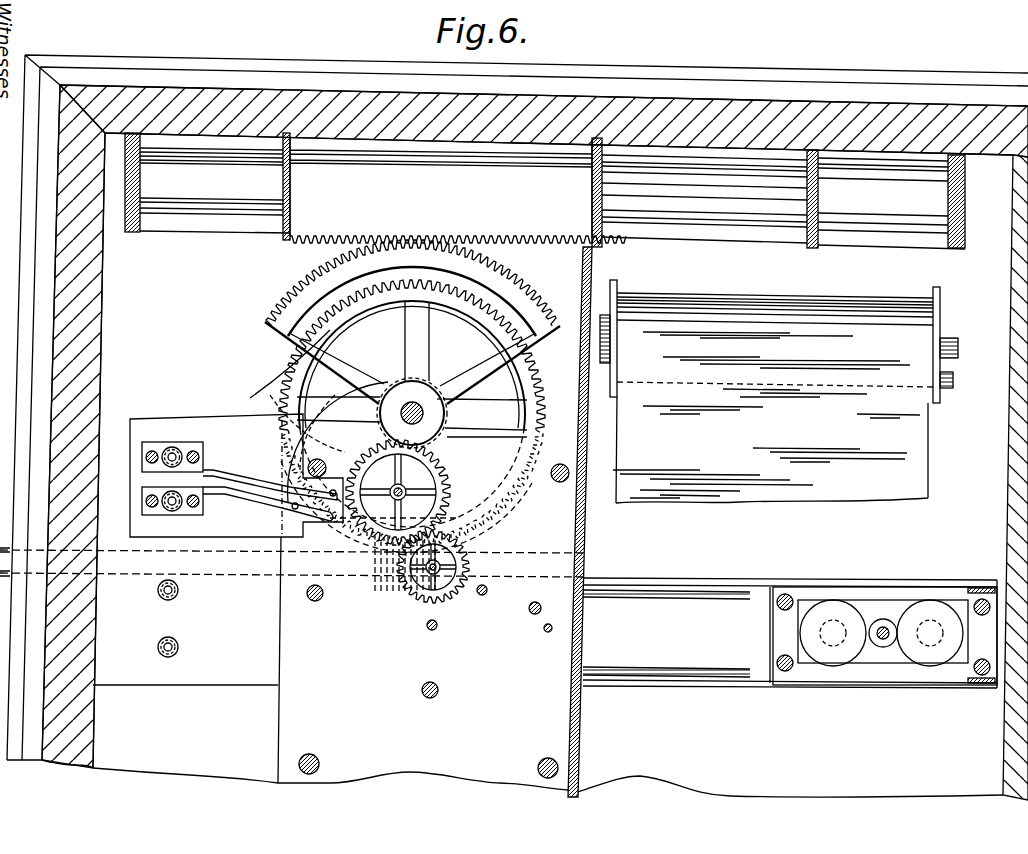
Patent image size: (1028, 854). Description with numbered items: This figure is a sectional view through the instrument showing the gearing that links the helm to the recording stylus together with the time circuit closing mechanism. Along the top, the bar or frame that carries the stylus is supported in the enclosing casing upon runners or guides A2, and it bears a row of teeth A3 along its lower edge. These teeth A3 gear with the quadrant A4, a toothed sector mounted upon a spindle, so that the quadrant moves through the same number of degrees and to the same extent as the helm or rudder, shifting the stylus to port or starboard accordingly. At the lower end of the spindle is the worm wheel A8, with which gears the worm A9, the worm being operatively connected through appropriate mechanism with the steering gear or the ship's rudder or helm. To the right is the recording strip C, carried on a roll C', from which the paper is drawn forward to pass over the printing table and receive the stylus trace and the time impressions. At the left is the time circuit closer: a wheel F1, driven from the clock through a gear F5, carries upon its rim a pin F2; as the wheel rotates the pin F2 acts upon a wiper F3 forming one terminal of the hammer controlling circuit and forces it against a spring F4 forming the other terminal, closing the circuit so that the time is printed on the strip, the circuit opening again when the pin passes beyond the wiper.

The runners or guides A2 is at (185, 207).
The teeth A3 is at (475, 238).
The quadrant A4 is at (503, 258).
The worm wheel A8 is at (497, 505).
The worm A9 is at (395, 592).
The recording strip C is at (766, 386).
The roll C' is at (952, 345).
The wheel F1 is at (300, 398).
The pin F2 is at (300, 432).
The wiper F3 is at (300, 482).
The spring F4 is at (240, 492).
The gear F5 is at (460, 590).